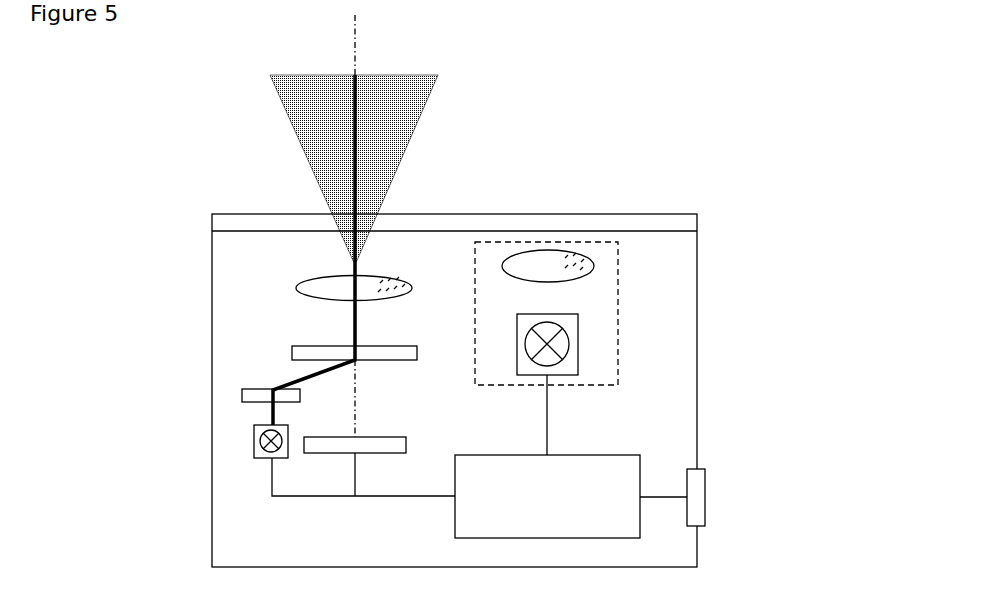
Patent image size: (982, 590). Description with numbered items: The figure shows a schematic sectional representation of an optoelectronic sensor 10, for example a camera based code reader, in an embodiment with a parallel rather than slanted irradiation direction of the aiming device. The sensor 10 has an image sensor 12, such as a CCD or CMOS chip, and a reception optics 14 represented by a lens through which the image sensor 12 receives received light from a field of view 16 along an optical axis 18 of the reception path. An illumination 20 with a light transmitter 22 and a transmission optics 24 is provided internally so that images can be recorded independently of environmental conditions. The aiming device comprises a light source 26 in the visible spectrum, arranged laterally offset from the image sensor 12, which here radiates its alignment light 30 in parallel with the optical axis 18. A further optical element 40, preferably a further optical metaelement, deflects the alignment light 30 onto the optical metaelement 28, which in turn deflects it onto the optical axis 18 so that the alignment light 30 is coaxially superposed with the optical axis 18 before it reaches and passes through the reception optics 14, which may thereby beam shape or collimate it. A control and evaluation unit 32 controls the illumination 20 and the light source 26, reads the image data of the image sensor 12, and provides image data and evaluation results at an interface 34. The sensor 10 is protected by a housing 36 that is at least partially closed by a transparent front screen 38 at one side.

The optoelectronic sensor 10 is at (785, 147).
The image sensor 12 is at (340, 447).
The reception optics 14 is at (365, 295).
The field of view 16 is at (302, 112).
The optical axis 18 is at (357, 60).
The illumination 20 is at (618, 327).
The light transmitter 22 is at (525, 345).
The transmission optics 24 is at (595, 270).
The light source 26 is at (253, 437).
The optical metaelement 28 is at (397, 364).
The alignment light 30 is at (300, 380).
The control and evaluation unit 32 is at (483, 510).
The interface 34 is at (700, 495).
The housing 36 is at (210, 403).
The front screen 38 is at (683, 220).
The further optical element 40 is at (300, 403).